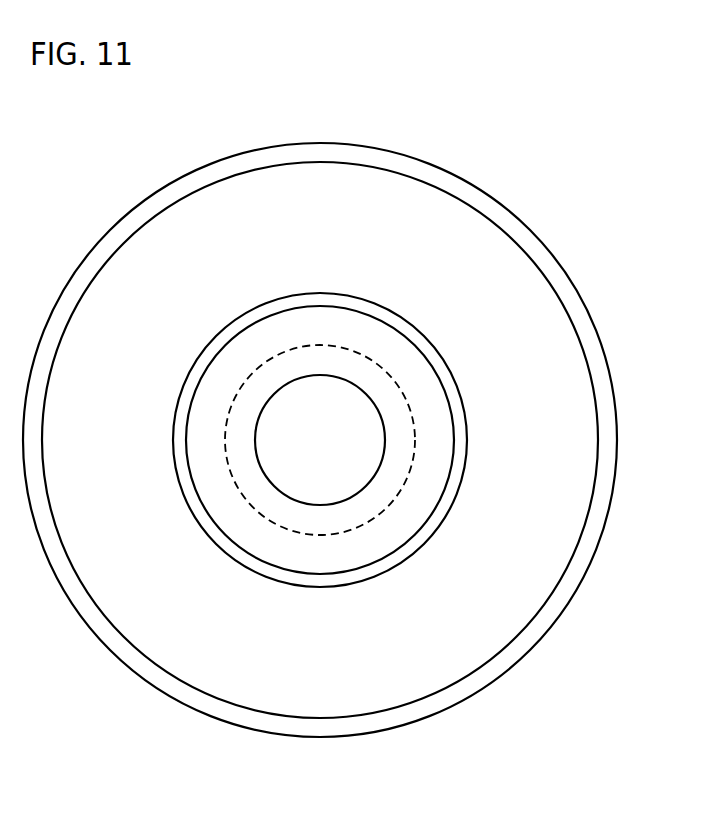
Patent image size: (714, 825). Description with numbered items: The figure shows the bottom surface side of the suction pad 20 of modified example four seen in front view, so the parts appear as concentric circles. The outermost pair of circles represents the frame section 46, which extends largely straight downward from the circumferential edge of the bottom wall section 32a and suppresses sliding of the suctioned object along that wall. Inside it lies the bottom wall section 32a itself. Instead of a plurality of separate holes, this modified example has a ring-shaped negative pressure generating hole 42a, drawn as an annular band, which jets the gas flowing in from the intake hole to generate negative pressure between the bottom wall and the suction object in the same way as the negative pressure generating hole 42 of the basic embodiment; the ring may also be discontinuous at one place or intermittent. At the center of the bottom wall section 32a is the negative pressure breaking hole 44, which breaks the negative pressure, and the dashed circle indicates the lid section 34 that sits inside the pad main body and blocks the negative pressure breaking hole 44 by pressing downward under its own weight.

The suction pad 20 is at (93, 122).
The frame section 46 is at (538, 628).
The bottom wall section 32a is at (445, 655).
The negative pressure generating hole 42 is at (420, 338).
The ring-shaped negative pressure generating hole 42a is at (319, 298).
The lid section 34 is at (410, 398).
The negative pressure breaking hole 44 is at (315, 407).